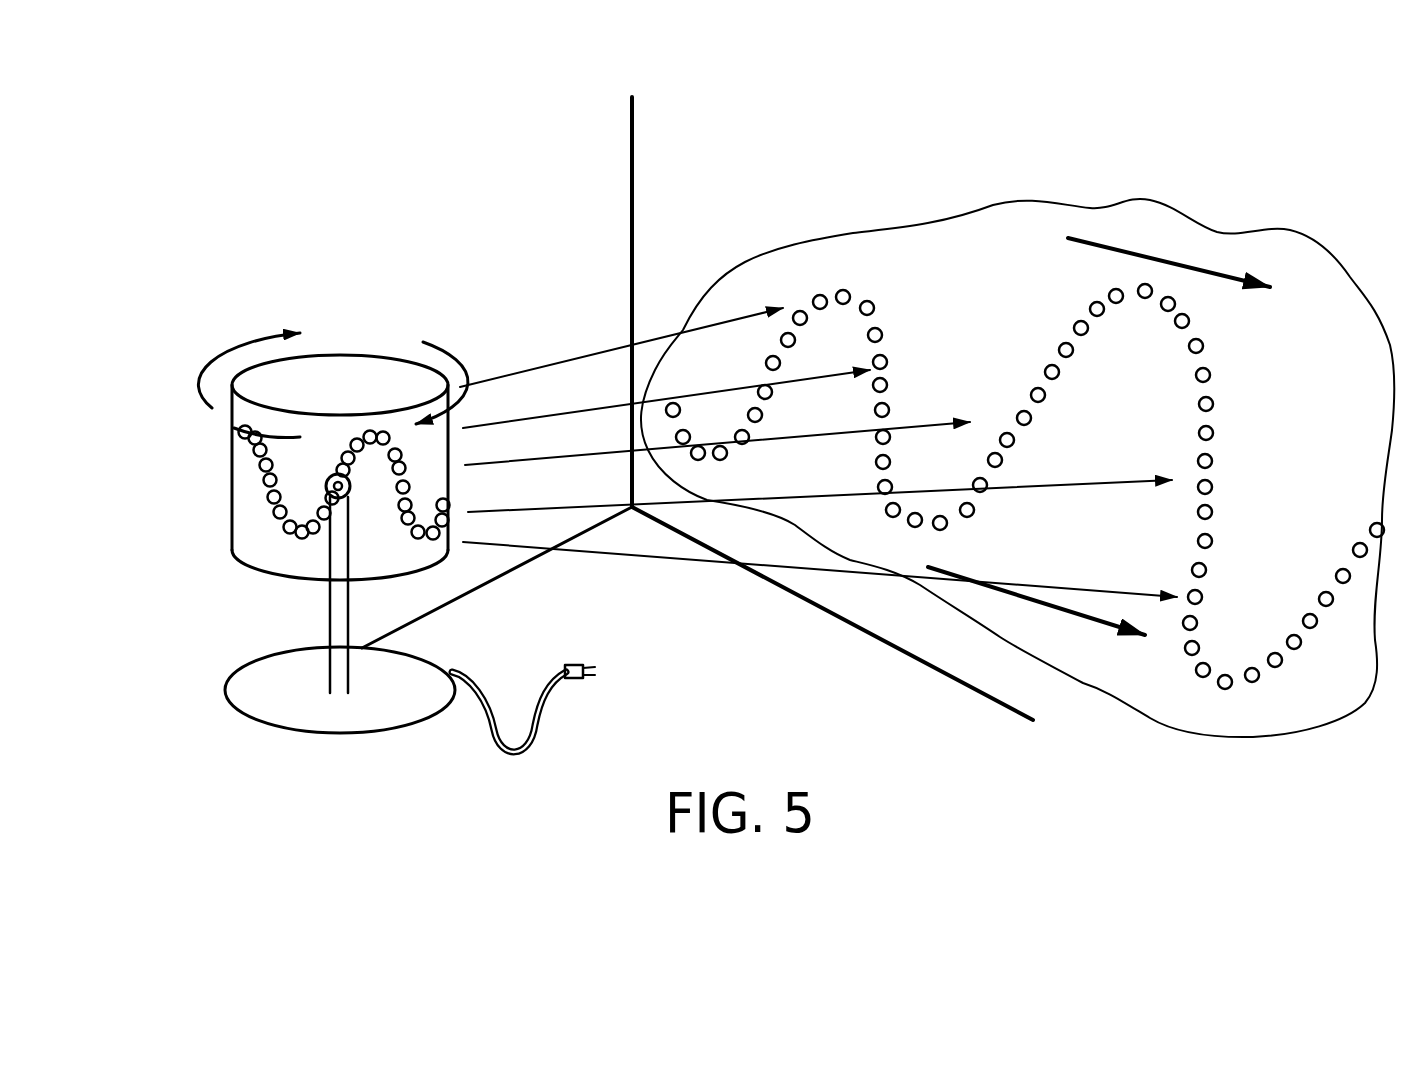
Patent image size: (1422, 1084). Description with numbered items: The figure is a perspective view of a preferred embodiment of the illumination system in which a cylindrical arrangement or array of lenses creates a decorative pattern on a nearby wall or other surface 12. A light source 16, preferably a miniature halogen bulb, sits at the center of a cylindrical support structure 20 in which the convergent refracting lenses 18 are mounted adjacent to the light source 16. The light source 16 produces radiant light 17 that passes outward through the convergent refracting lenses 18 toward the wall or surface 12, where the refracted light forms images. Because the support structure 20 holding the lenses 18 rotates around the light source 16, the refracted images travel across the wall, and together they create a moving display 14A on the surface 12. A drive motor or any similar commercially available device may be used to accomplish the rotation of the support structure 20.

The wall or other surface 12 is at (1328, 477).
The moving display 14A is at (867, 305).
The light source 16 is at (326, 492).
The radiant light 17 is at (573, 358).
The convergent refracting lens 18 is at (253, 443).
The support structure 20 is at (250, 533).